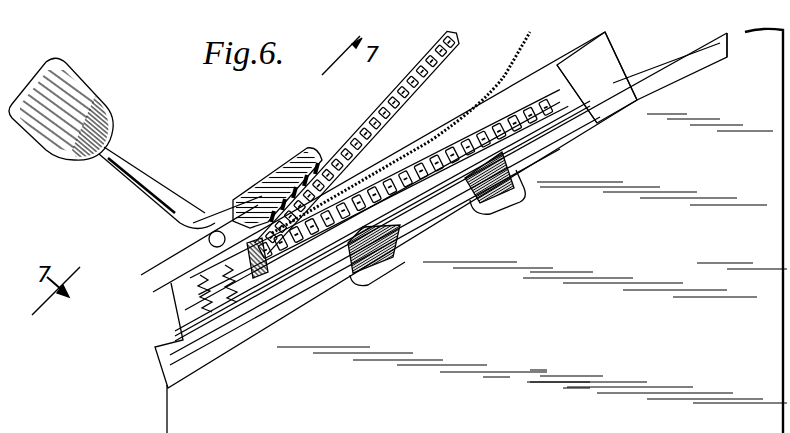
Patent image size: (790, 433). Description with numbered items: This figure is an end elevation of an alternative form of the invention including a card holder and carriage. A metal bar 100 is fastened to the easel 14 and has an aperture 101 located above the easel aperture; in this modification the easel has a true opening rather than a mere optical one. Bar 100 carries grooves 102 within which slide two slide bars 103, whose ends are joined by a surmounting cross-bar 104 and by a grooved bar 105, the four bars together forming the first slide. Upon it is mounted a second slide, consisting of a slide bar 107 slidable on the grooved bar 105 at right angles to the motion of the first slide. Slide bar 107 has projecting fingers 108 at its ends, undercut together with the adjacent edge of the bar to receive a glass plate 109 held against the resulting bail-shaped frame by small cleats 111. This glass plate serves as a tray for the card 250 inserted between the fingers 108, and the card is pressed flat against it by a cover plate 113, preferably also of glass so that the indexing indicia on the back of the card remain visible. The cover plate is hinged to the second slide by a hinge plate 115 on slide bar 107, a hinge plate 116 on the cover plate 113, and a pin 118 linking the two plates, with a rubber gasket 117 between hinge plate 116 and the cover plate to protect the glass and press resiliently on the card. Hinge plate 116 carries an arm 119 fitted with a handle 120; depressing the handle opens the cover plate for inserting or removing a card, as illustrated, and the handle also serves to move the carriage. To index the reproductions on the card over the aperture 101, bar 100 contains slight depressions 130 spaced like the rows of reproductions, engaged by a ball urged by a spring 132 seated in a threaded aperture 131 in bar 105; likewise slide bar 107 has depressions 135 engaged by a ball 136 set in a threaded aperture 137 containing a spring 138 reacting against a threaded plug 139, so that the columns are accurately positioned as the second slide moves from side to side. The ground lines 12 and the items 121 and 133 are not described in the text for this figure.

The ground surface 12 is at (592, 330).
The easel 14 is at (487, 212).
The metal bar 100 is at (700, 34).
The aperture 101 is at (400, 220).
The grooves 102 is at (727, 56).
The slide bars 103 is at (540, 135).
The cross-bar 104 is at (647, 40).
The grooved bar 105 is at (182, 305).
The slide bar 107 is at (173, 323).
The projecting fingers 108 is at (603, 47).
The glass plate 109 is at (500, 105).
The cleats 111 is at (610, 63).
The cover plate 113 is at (383, 103).
The hinge plate 115 is at (162, 286).
The hinge plate 116 is at (286, 158).
The rubber gasket 117 is at (323, 158).
The pin 118 is at (211, 218).
The arm 119 is at (152, 184).
The handle 120 is at (82, 88).
The pivot pin 121 is at (150, 280).
The depressions 130 is at (447, 237).
The threaded aperture 131 is at (288, 320).
The spring 132 is at (250, 340).
The link 133 is at (270, 296).
The depressions 135 is at (167, 264).
The ball 136 is at (165, 246).
The threaded aperture 137 is at (202, 349).
The spring 138 is at (173, 333).
The threaded plug 139 is at (203, 300).
The card 250 is at (515, 60).